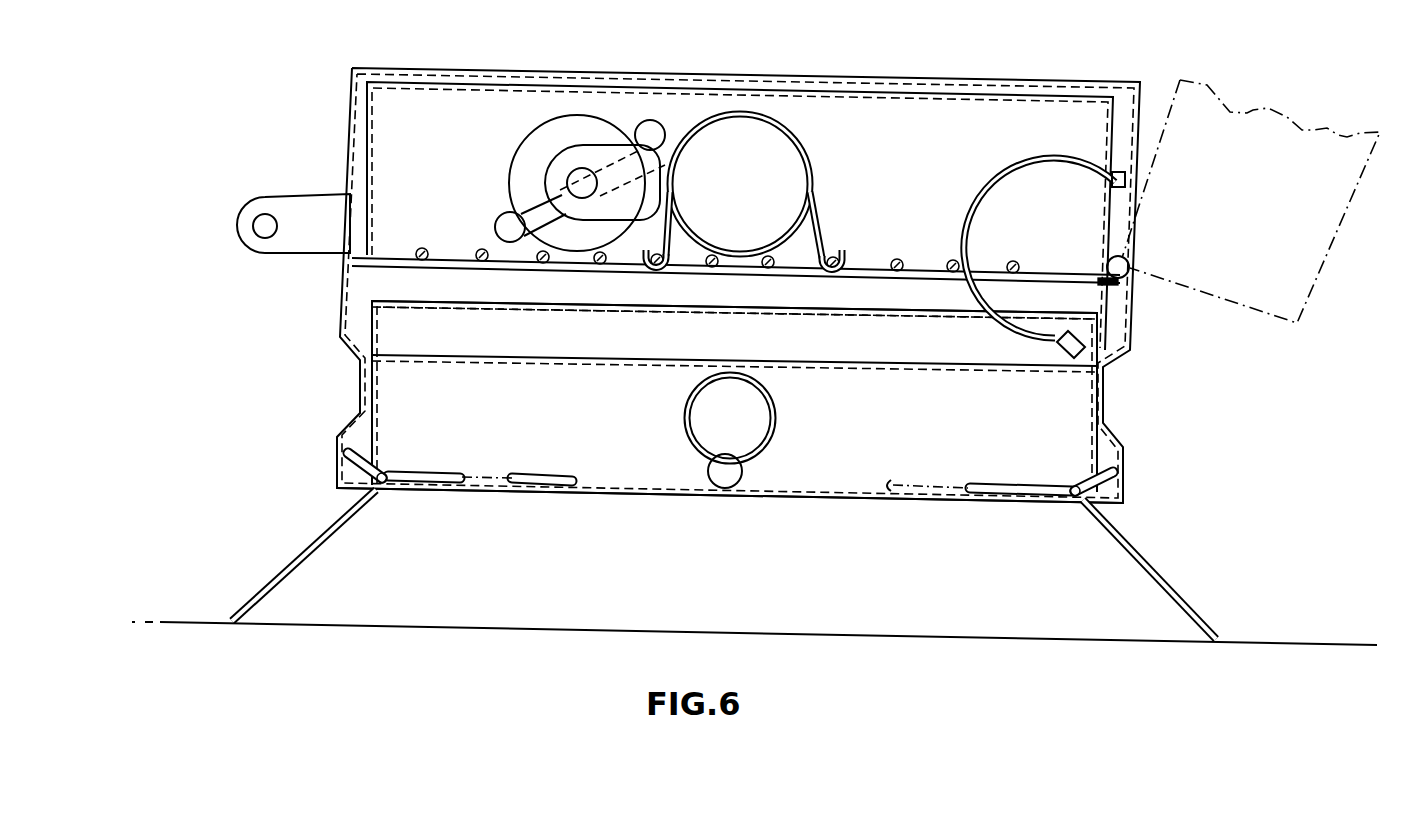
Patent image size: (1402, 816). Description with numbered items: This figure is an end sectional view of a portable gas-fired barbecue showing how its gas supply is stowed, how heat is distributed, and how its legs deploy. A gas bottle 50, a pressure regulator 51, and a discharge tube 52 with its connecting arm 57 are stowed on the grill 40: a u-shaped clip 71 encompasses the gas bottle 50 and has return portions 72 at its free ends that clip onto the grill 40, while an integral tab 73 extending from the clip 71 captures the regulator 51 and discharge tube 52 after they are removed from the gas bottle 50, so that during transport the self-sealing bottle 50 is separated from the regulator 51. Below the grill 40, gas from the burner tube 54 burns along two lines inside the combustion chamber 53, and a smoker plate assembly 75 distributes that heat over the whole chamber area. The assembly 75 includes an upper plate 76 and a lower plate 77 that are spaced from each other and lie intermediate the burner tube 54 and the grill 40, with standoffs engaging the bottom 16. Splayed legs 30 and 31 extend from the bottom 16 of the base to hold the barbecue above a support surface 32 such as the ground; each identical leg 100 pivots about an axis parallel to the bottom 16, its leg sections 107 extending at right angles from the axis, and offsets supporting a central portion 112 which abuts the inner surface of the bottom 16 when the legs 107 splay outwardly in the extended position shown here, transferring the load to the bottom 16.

The bottom 16 is at (777, 500).
The leg 30 is at (1181, 597).
The leg 31 is at (281, 570).
The support surface 32 is at (1313, 641).
The grill 40 is at (903, 260).
The gas bottle 50 is at (783, 177).
The pressure regulator 51 is at (545, 143).
The discharge tube 52 is at (592, 187).
The combustion chamber 53 is at (641, 470).
The burner tube 54 is at (777, 423).
The connecting arm 57 is at (537, 207).
The u-shaped clip 71 is at (840, 200).
The return portions 72 is at (838, 257).
The integral tab 73 is at (600, 157).
The smoker plate assembly 75 is at (1107, 409).
The upper plate 76 is at (785, 312).
The lower plate 77 is at (860, 358).
The leg 100 is at (428, 478).
The leg section 107 is at (537, 472).
The central portion 112 is at (373, 461).